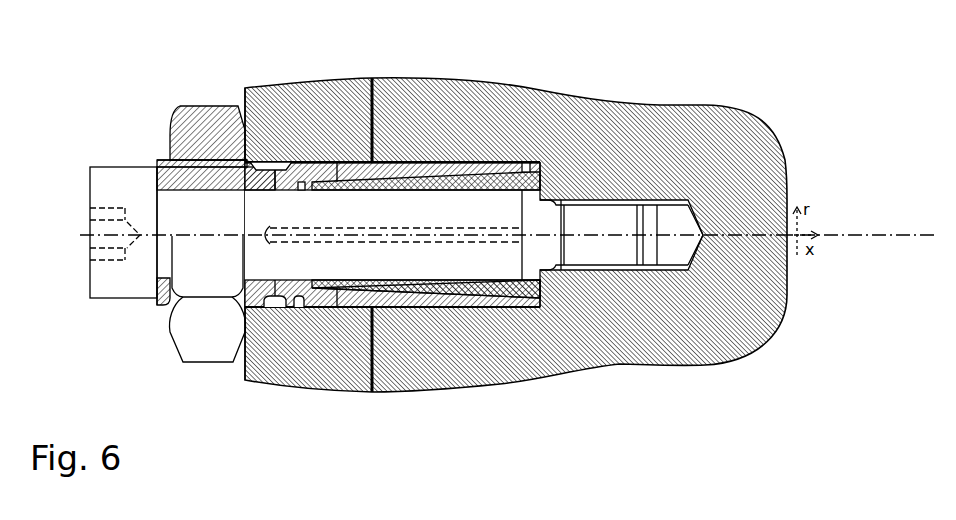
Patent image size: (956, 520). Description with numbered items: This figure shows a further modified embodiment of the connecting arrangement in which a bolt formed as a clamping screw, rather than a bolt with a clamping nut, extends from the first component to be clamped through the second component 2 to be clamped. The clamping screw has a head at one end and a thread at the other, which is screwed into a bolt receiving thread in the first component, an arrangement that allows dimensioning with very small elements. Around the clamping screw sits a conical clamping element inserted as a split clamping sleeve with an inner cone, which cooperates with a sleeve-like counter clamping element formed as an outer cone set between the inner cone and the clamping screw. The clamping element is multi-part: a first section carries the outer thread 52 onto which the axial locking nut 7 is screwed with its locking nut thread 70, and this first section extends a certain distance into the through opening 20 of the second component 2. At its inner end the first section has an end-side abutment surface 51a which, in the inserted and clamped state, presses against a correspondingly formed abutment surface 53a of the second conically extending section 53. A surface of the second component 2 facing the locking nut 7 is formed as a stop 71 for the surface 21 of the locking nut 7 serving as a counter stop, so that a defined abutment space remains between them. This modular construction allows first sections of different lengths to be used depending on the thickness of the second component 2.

The second component 2 is at (245, 383).
The axial locking nut 7 is at (180, 107).
The through opening 20 is at (372, 391).
The counter stop 21 is at (234, 100).
The end-side abutment surface 51a is at (285, 303).
The outer thread 52 is at (160, 165).
The second conically extending section 53 is at (393, 157).
The abutment surface 53a is at (266, 303).
The locking nut thread 70 is at (170, 162).
The stop 71 is at (257, 138).